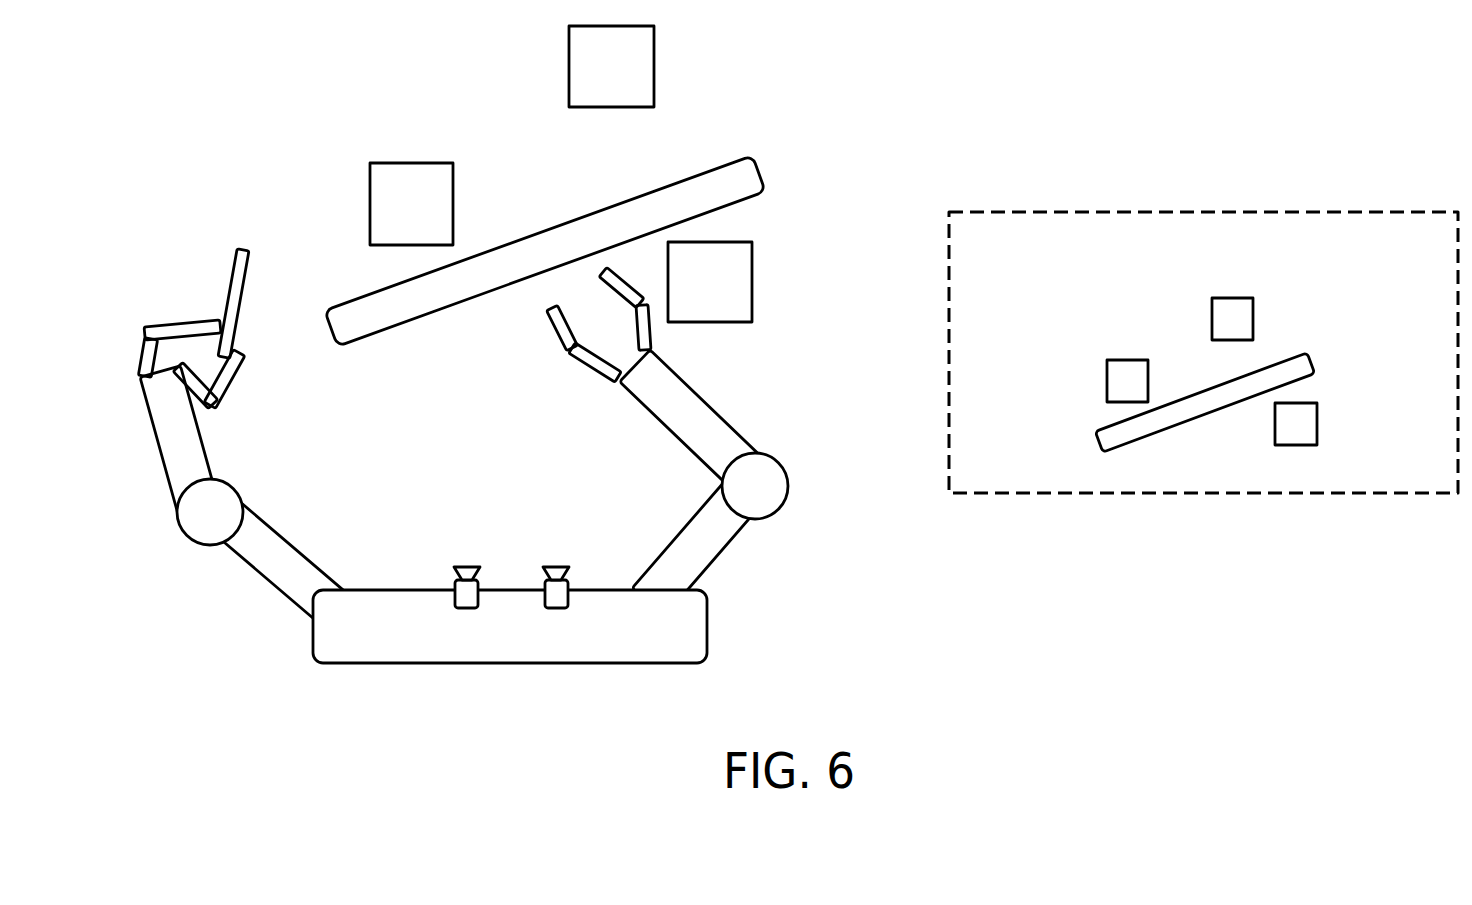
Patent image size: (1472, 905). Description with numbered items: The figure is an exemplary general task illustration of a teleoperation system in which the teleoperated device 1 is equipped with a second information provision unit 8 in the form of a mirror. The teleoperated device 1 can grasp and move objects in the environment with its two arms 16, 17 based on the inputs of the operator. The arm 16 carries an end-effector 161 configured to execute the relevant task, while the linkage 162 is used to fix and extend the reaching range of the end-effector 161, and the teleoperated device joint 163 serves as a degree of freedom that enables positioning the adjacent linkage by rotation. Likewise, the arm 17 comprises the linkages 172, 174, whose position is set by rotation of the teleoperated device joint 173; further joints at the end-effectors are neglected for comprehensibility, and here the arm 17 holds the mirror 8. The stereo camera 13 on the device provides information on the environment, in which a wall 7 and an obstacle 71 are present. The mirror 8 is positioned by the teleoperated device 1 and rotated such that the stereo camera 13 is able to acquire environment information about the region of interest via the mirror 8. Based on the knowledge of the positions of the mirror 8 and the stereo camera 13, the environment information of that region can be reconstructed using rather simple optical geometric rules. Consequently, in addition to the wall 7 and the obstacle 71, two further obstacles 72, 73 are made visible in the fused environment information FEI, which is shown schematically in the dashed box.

The teleoperated device 1 is at (712, 625).
The stereo camera 13 is at (467, 563).
The arm 16 is at (722, 414).
The end-effector 161 is at (654, 329).
The linkage 162 is at (662, 398).
The teleoperated device joint 163 is at (757, 491).
The arm 17 is at (213, 467).
The linkage 172 is at (141, 353).
The teleoperated device joint 173 is at (219, 494).
The linkage 174 is at (283, 573).
The second information provision unit 8 is at (226, 305).
The wall 7 is at (762, 168).
The obstacle 71 is at (754, 266).
The further obstacle 72 is at (658, 40).
The further obstacle 73 is at (457, 206).
The fused environment information FEI is at (1038, 209).